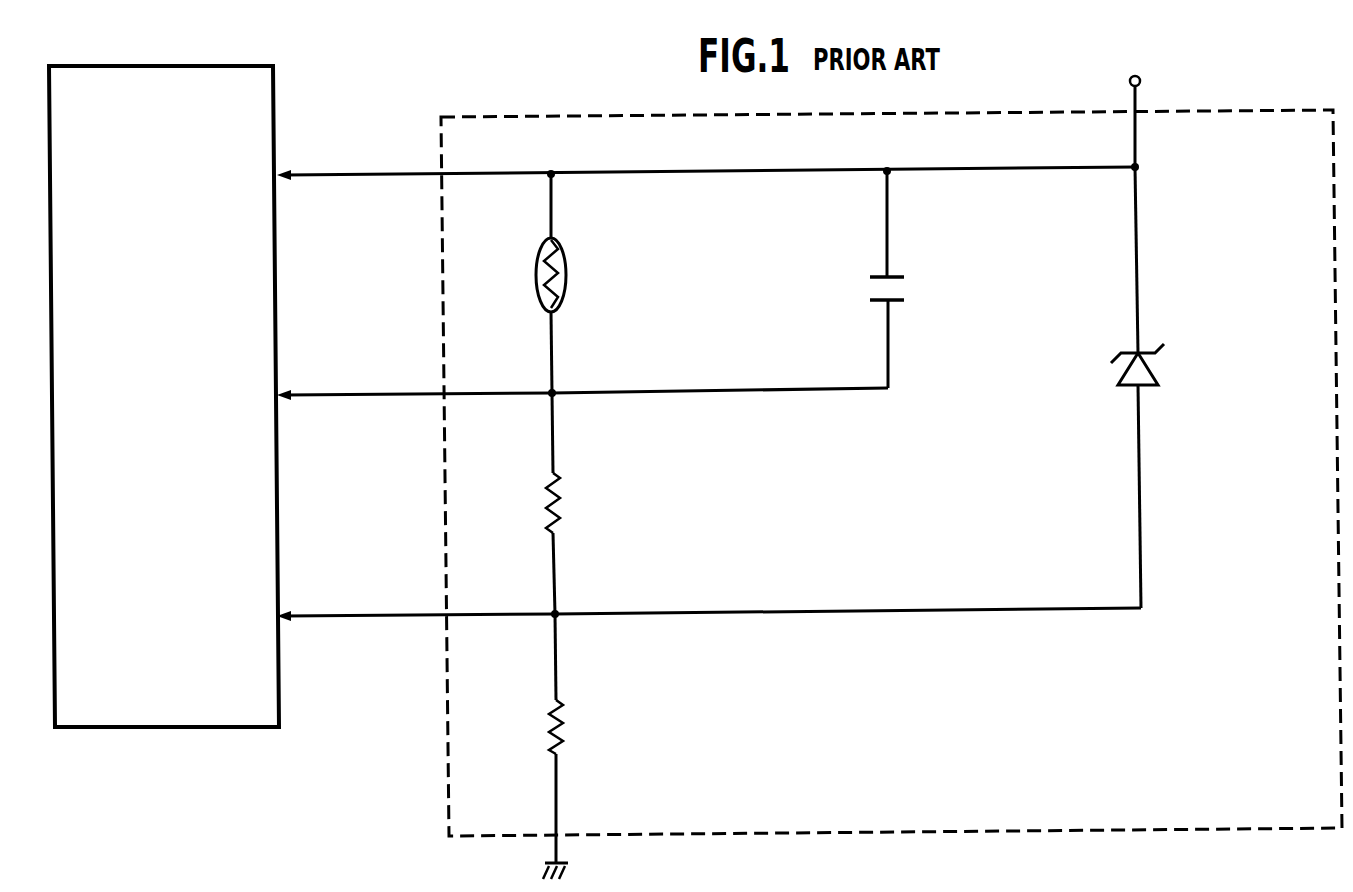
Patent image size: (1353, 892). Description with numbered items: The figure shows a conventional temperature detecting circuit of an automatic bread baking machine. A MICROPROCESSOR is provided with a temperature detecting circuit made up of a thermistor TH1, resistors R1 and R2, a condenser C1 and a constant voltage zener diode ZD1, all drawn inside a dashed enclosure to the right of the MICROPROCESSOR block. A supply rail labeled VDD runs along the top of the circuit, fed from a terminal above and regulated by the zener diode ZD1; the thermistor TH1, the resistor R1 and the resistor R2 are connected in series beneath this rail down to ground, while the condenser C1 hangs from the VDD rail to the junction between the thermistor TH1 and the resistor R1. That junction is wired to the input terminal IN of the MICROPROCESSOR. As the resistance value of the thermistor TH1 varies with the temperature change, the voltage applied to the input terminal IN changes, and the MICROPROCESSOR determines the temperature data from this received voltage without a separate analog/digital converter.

The microprocessor MICROPROCESSOR is at (164, 396).
The supply voltage node VDD is at (708, 128).
The input terminal IN is at (568, 356).
The thermistor TH1 is at (570, 283).
The resistor R1 is at (570, 503).
The resistor R2 is at (574, 746).
The condenser C1 is at (903, 236).
The constant voltage zener diode ZD1 is at (1159, 387).